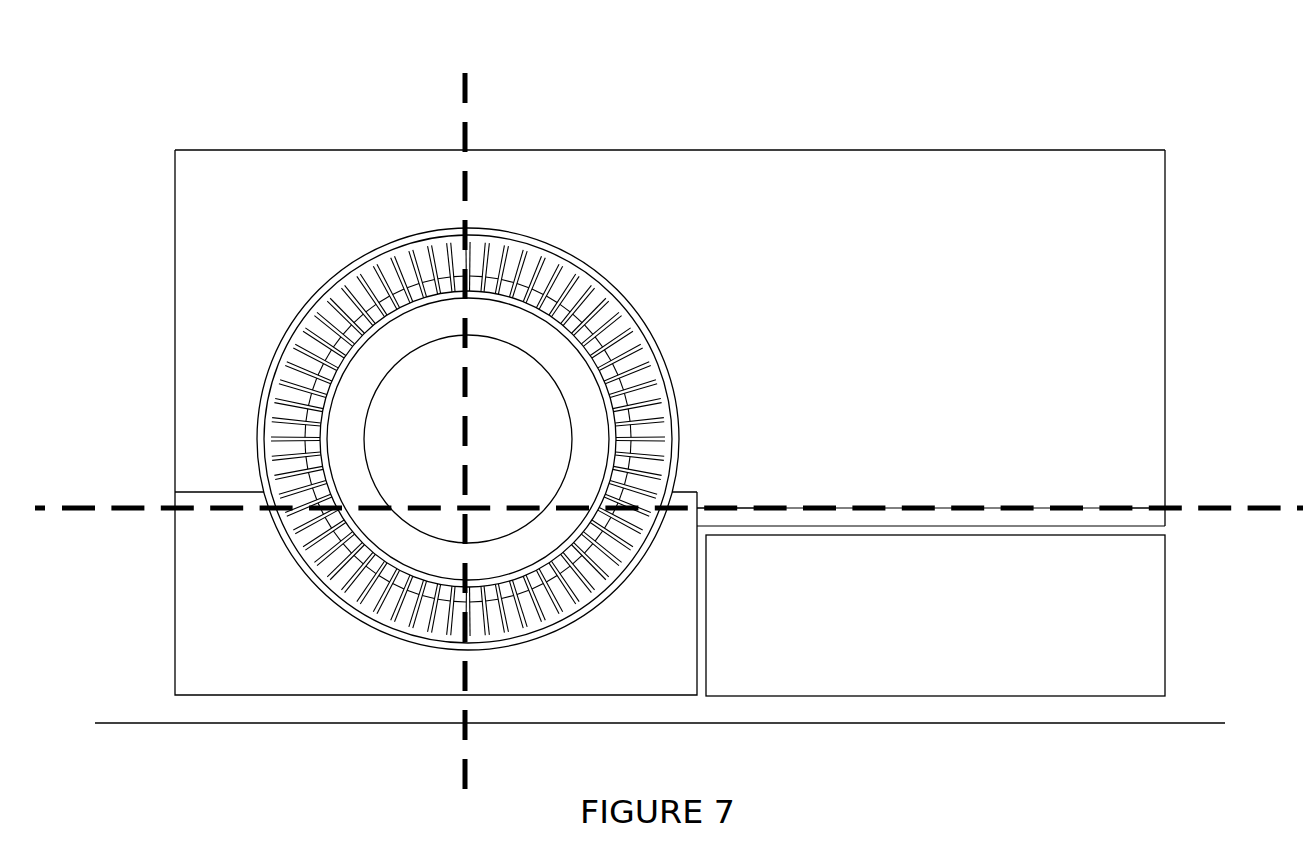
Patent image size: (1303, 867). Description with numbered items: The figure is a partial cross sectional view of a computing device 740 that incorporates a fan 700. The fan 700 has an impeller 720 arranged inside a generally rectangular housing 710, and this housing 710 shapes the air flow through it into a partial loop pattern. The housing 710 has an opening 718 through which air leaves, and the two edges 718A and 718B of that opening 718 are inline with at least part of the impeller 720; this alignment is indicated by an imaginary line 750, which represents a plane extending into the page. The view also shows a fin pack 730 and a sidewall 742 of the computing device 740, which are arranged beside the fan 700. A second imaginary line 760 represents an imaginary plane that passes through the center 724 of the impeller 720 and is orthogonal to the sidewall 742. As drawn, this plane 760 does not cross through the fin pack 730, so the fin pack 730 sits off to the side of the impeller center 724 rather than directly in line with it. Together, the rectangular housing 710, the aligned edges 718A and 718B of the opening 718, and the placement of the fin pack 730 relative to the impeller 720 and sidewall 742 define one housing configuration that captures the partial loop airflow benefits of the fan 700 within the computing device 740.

The fan 700 is at (1166, 312).
The housing 710 is at (175, 294).
The opening 718 is at (869, 508).
The edge of opening 718A is at (709, 508).
The edge of opening 718B is at (1146, 508).
The impeller 720 is at (681, 428).
The center of the impeller 724 is at (462, 440).
The fin pack 730 is at (1166, 598).
The computing device 740 is at (236, 73).
The sidewall 742 is at (925, 723).
The imaginary line 750 is at (124, 510).
The imaginary line 760 is at (468, 138).